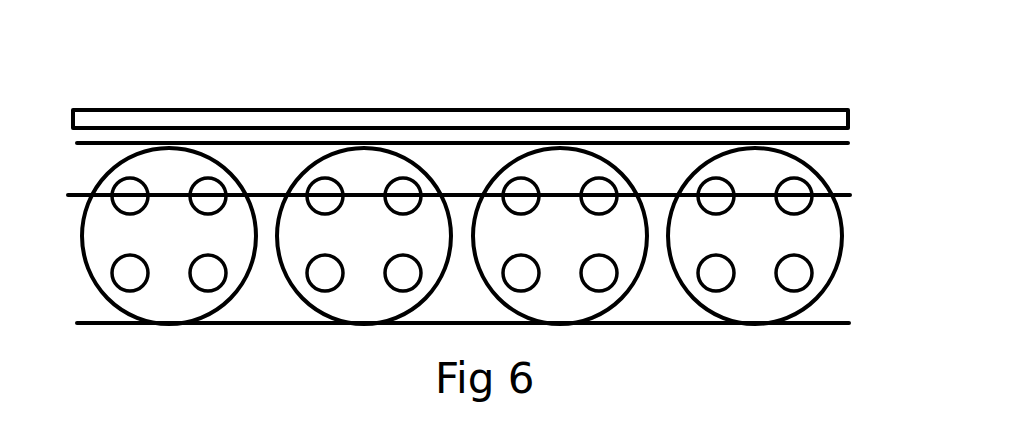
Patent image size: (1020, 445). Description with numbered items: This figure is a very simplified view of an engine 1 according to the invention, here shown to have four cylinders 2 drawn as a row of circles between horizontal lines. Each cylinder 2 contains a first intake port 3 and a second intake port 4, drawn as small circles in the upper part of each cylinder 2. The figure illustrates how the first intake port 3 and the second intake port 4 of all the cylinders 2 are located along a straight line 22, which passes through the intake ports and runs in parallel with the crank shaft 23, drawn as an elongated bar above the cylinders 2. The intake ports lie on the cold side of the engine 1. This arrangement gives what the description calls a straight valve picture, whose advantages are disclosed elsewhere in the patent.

The engine 1 is at (326, 329).
The cylinders 2 is at (175, 325).
The first intake port 3 is at (120, 188).
The second intake port 4 is at (208, 187).
The straight line 22 is at (850, 195).
The crank shaft 23 is at (448, 111).